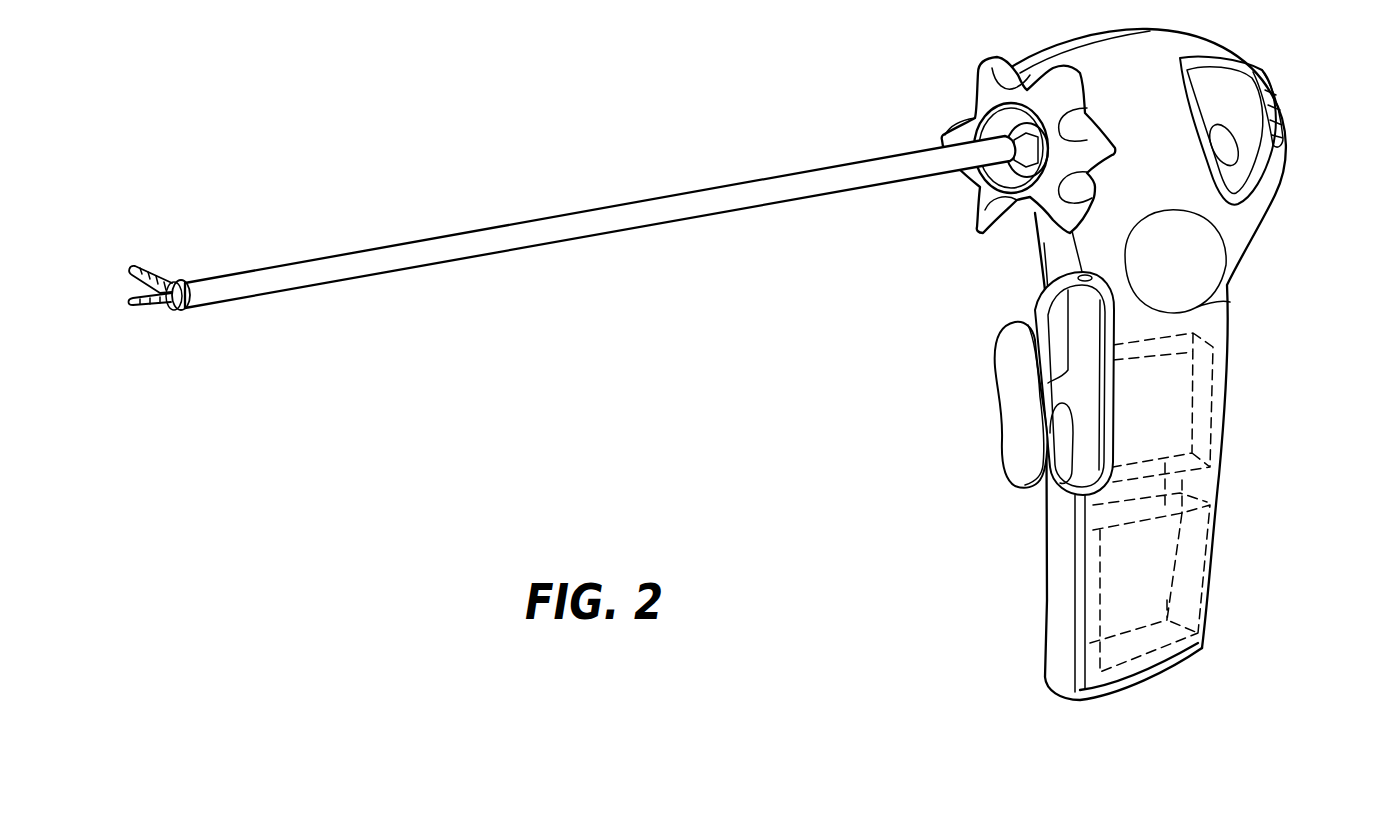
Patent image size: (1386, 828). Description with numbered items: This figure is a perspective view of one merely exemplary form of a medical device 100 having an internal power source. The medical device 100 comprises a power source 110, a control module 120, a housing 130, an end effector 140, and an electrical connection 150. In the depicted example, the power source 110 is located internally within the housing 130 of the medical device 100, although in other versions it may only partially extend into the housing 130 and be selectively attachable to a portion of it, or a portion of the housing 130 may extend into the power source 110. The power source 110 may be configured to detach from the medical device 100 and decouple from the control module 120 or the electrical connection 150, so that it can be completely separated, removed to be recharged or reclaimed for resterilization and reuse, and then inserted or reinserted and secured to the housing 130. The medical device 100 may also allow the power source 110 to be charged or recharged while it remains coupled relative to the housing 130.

The medical device 100 is at (737, 364).
The power source 110 is at (1206, 595).
The control module 120 is at (1220, 406).
The housing 130 is at (1226, 323).
The end effector 140 is at (166, 338).
The electrical connection 150 is at (1213, 468).